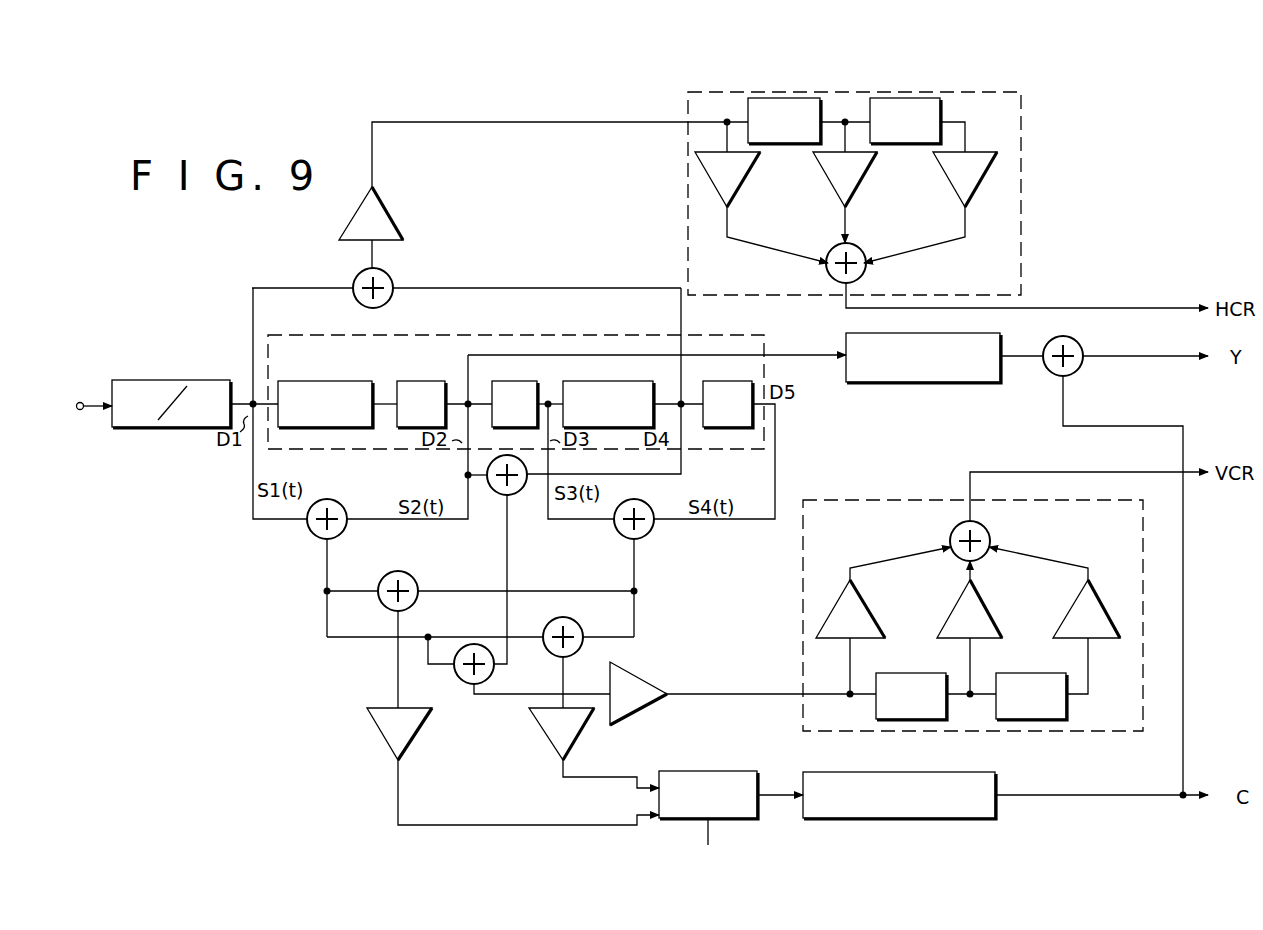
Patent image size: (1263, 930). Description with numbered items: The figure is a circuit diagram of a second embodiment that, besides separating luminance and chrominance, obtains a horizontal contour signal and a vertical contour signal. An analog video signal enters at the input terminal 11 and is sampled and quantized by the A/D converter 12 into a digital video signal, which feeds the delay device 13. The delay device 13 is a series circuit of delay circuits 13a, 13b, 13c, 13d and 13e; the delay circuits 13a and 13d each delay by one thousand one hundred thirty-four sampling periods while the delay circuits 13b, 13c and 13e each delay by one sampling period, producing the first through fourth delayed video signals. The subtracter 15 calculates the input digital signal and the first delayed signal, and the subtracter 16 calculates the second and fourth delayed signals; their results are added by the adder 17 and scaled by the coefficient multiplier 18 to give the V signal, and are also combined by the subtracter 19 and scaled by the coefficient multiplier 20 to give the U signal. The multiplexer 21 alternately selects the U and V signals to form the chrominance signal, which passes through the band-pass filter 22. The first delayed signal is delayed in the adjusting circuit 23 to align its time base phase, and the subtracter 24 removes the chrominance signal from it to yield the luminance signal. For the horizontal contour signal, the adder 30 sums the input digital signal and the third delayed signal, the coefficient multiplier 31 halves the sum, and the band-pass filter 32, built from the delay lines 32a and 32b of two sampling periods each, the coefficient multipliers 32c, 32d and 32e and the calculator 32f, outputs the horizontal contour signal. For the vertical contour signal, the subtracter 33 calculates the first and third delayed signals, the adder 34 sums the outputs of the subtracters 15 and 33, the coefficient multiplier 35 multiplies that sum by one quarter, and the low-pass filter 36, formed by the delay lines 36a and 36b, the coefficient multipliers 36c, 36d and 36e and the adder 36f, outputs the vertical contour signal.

The input terminal 11 is at (87, 407).
The analog/digital converter 12 is at (158, 381).
The delay device 13 is at (470, 335).
The delay circuit 13a is at (290, 382).
The delay circuit 13b is at (398, 382).
The delay circuit 13c is at (489, 382).
The delay circuit 13d is at (574, 382).
The delay circuit 13e is at (700, 382).
The subtracter 15 is at (312, 534).
The subtracter 16 is at (620, 534).
The adder 17 is at (384, 606).
The coefficient multiplier 18 is at (378, 745).
The subtracter 19 is at (550, 651).
The coefficient multiplier 20 is at (544, 740).
The multiplexer 21 is at (710, 771).
The band-pass filter 22 is at (870, 772).
The adjusting circuit 23 is at (901, 383).
The subtracter 24 is at (1104, 563).
The adder 30 is at (352, 302).
The coefficient multiplier 31 is at (394, 213).
The band-pass filter 32 is at (688, 178).
The delay line 32a is at (776, 143).
The delay line 32b is at (907, 143).
The coefficient multiplier 32c is at (735, 195).
The coefficient multiplier 32d is at (853, 195).
The coefficient multiplier 32e is at (974, 191).
The calculator 32f is at (832, 280).
The subtracter 33 is at (500, 501).
The adder 34 is at (464, 684).
The coefficient multiplier 35 is at (743, 685).
The low-pass filter 36 is at (803, 613).
The delay line 36a is at (890, 673).
The delay line 36b is at (1010, 673).
The coefficient multiplier 36c is at (884, 614).
The coefficient multiplier 36d is at (1002, 614).
The coefficient multiplier 36e is at (1112, 613).
The adder 36f is at (980, 536).